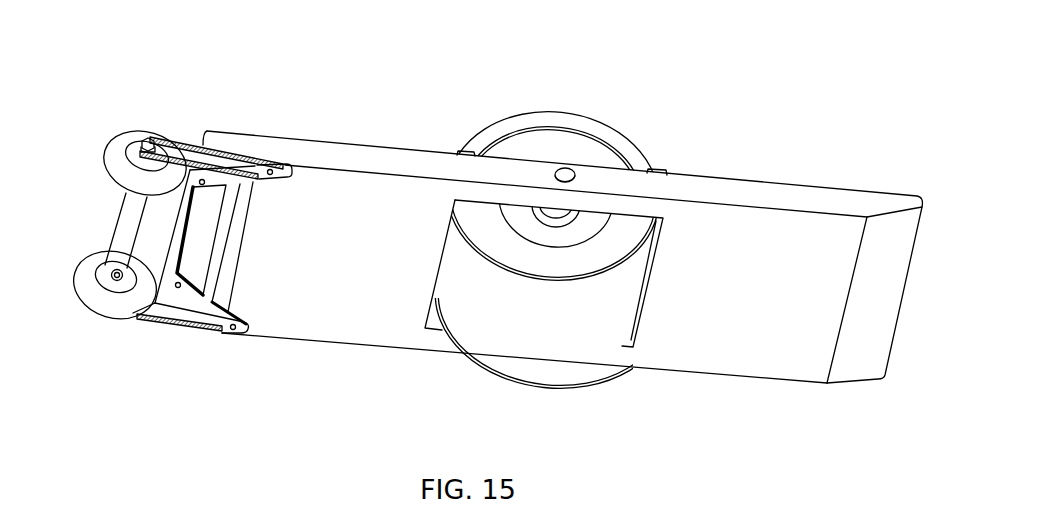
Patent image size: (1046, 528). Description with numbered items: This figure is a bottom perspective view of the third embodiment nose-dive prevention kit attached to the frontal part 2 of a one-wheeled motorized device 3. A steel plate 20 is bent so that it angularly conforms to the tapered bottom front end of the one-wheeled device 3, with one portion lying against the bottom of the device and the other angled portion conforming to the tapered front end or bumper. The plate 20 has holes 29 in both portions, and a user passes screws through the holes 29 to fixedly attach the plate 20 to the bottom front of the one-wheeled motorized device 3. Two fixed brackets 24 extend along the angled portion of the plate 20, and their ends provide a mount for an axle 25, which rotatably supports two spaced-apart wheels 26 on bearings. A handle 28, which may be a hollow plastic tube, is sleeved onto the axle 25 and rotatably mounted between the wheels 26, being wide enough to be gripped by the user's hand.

The frontal part 2 is at (250, 254).
The one-wheeled motorized device 3 is at (698, 90).
The steel plate 20 is at (190, 298).
The fixed brackets 24 is at (203, 180).
The axle 25 is at (110, 277).
The wheels 26 is at (107, 140).
The handle 28 is at (117, 222).
The holes 29 is at (236, 177).